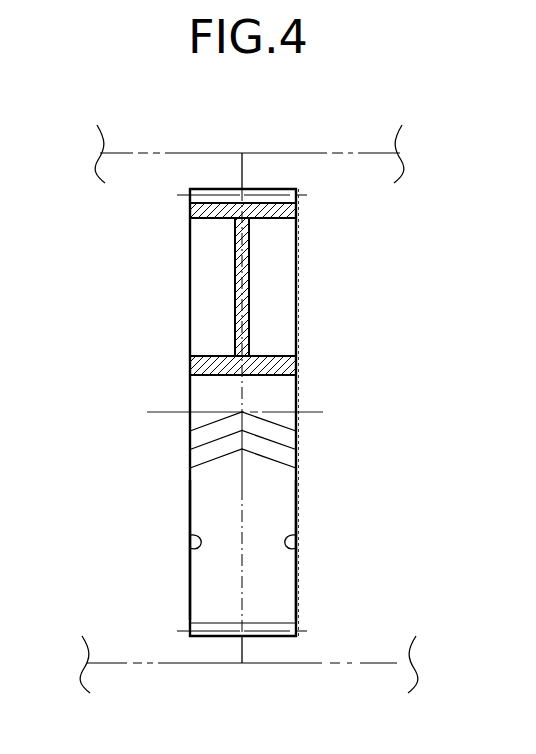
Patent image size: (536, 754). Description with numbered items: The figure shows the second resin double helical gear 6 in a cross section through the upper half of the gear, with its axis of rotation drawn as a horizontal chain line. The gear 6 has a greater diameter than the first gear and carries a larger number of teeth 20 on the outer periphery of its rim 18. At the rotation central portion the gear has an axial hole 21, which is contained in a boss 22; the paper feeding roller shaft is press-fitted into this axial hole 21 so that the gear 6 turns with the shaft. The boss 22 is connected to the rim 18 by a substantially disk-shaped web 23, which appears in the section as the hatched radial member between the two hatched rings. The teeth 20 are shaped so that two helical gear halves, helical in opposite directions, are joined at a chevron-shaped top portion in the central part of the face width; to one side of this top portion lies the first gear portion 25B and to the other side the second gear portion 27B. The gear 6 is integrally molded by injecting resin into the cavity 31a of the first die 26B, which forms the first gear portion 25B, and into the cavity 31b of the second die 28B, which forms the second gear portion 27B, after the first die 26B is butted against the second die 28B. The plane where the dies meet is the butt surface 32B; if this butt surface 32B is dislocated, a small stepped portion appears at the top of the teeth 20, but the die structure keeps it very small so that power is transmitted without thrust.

The second resin double helical gear 6 is at (298, 293).
The rim 18 is at (210, 220).
The teeth 20 is at (227, 194).
The axial hole 21 is at (270, 375).
The boss 22 is at (210, 368).
The web 23 is at (235, 290).
The first gear portion 25B is at (210, 190).
The second gear portion 27B is at (263, 192).
The first die 26B is at (190, 665).
The second die 28B is at (322, 665).
The cavity 31a is at (190, 542).
The cavity 31b is at (296, 542).
The butt surface 32B is at (243, 655).